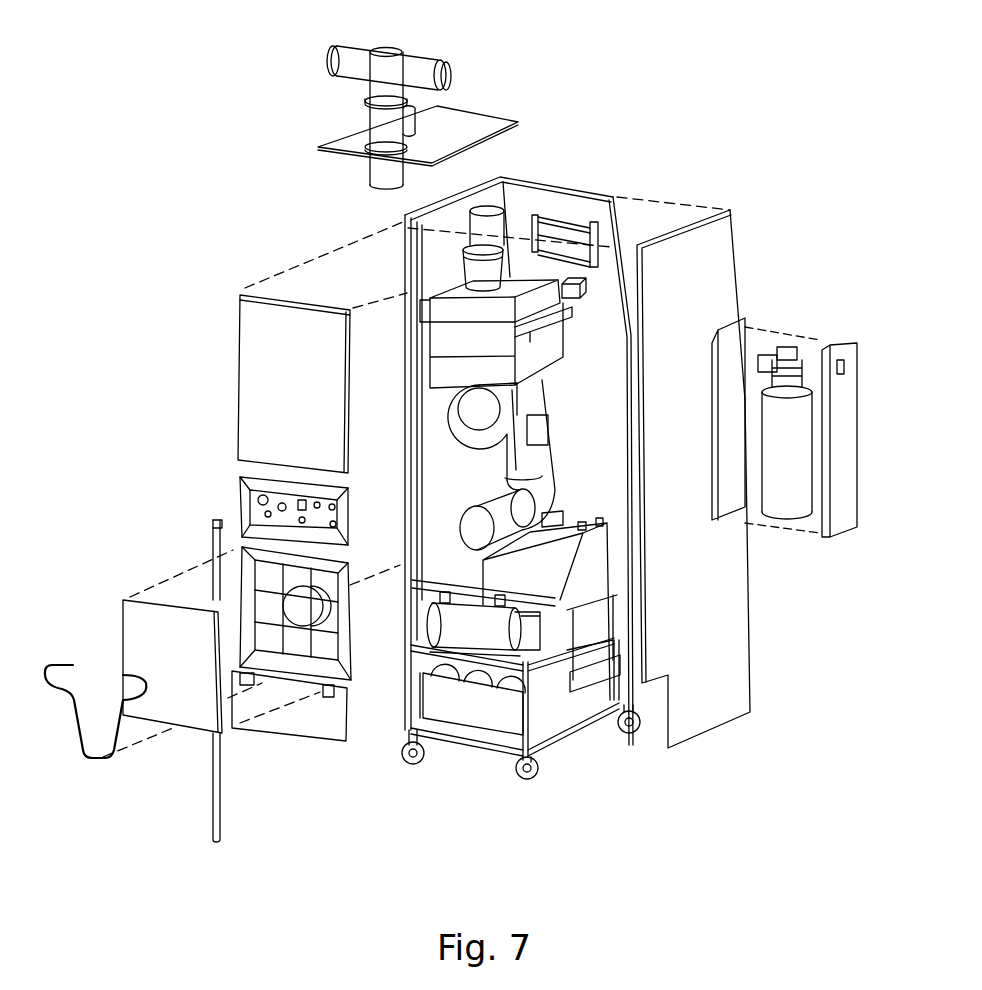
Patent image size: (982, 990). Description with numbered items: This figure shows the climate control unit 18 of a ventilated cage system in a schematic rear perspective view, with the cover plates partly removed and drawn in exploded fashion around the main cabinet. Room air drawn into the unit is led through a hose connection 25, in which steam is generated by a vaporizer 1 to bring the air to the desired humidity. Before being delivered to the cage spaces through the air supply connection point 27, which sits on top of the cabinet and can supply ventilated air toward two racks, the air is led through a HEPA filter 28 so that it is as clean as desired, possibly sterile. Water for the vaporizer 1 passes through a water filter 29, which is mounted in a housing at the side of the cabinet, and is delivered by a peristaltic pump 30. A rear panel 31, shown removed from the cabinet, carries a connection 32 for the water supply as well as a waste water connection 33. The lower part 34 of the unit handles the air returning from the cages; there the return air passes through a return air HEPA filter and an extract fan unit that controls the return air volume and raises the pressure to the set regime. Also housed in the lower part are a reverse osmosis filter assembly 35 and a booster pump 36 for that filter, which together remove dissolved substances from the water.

The vaporizer 1 is at (593, 323).
The climate control unit 18 is at (650, 135).
The hose connection 25 is at (535, 462).
The air supply connection point 27 is at (405, 68).
The HEPA filter 28 is at (445, 296).
The water filter 29 is at (798, 417).
The peristaltic pump 30 is at (566, 292).
The rear panel 31 is at (258, 353).
The connection for the water supply 32 is at (282, 503).
The waste water connection 33 is at (235, 546).
The part of the cage system relating to the air returning from the cages 34 is at (607, 757).
The reverse osmosis filter assembly 35 is at (490, 643).
The booster pump 36 is at (525, 584).